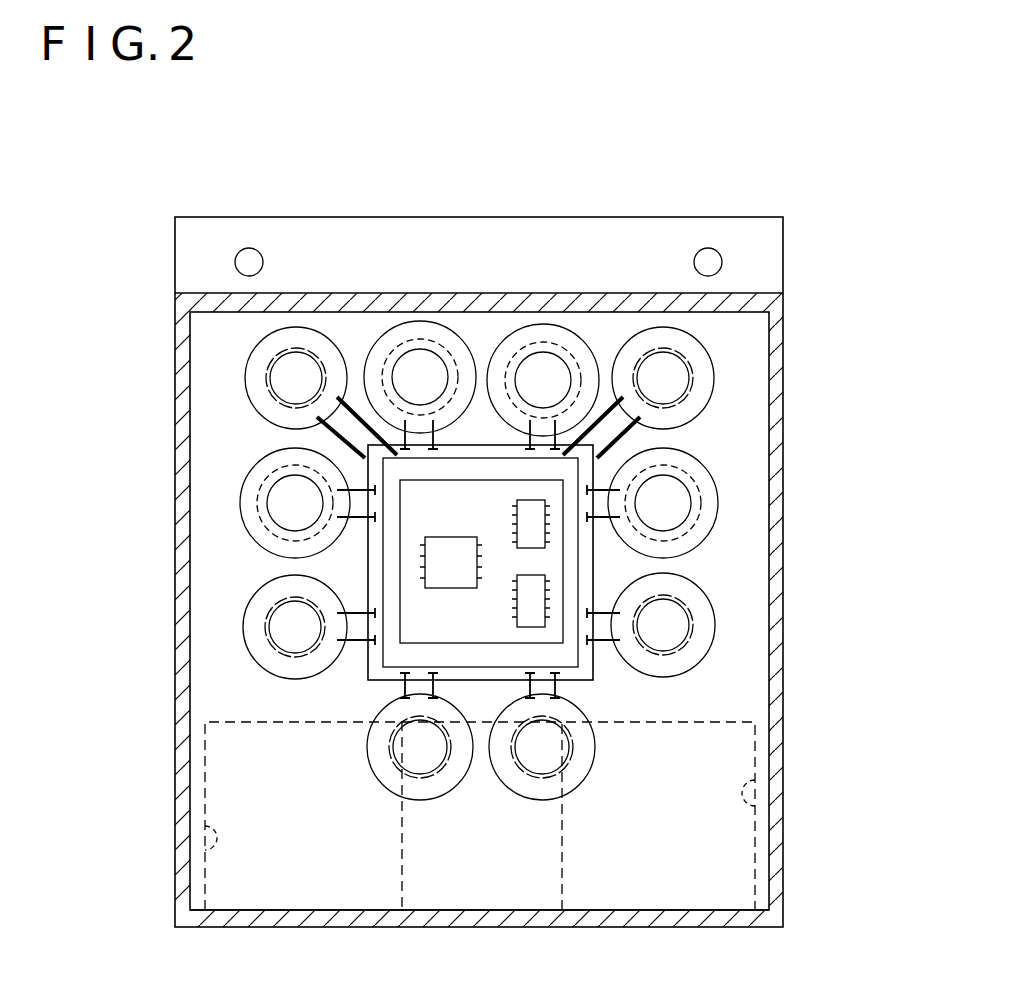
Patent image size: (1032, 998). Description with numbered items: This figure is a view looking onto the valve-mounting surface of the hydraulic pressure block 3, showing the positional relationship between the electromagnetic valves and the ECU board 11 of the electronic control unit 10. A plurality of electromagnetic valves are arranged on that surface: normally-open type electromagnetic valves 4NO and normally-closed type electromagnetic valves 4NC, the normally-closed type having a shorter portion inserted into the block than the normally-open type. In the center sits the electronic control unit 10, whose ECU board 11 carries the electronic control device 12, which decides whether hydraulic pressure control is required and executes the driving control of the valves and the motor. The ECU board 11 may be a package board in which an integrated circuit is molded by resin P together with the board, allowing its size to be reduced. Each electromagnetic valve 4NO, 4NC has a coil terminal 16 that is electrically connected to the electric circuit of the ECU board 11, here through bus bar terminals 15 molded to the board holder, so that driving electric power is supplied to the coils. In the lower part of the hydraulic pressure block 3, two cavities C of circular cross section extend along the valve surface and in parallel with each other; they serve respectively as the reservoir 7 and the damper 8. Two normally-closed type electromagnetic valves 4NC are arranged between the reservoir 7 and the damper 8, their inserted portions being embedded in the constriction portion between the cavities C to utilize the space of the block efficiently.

The hydraulic pressure block 3 is at (215, 929).
The reservoir 7 is at (665, 886).
The damper 8 is at (292, 886).
The electronic control unit 10 is at (785, 873).
The ECU board 11 is at (423, 623).
The electronic control device 12 is at (445, 568).
The bus bar terminals 15 is at (368, 467).
The coil terminal 16 is at (372, 418).
The normally-open type electromagnetic valve 4NO is at (543, 333).
The normally-closed type electromagnetic valve 4NC is at (703, 382).
The resin P is at (568, 580).
The cavities C is at (200, 852).